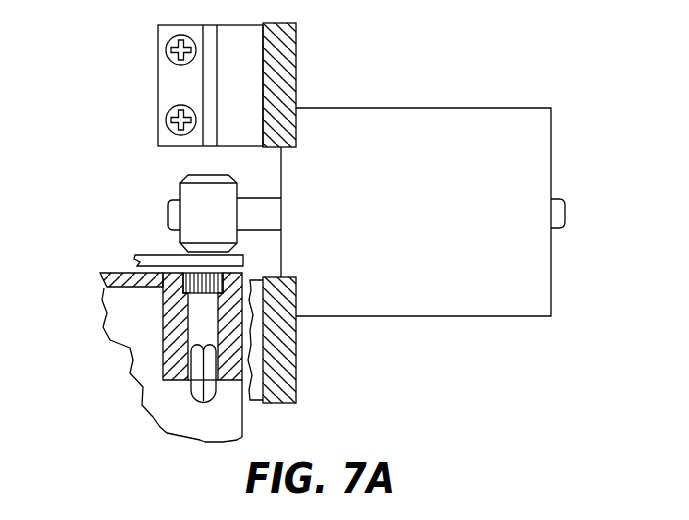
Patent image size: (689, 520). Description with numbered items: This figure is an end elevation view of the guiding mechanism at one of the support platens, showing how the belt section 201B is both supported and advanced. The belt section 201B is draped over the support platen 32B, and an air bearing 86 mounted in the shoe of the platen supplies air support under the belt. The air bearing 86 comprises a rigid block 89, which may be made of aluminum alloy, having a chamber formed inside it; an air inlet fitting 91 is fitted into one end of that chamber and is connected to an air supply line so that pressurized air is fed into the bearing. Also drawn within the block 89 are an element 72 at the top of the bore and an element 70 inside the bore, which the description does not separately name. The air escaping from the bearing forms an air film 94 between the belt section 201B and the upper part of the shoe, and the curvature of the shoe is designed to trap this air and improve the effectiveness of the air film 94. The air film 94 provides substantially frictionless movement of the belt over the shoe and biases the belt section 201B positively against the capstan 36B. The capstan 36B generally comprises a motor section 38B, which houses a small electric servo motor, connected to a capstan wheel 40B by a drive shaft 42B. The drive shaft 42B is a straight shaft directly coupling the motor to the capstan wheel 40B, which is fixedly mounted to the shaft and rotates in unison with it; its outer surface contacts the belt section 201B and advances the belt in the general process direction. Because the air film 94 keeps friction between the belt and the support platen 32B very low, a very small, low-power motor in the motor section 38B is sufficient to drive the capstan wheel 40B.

The motor section 38B is at (407, 108).
The capstan 36B is at (440, 229).
The capstan wheel 40B is at (197, 200).
The drive shaft 42B is at (253, 207).
The belt section 201B is at (140, 222).
The air film 94 is at (128, 266).
The support platen 32B is at (105, 282).
The rigid block 89 is at (163, 313).
The air bearing 86 is at (163, 360).
The nut 72 is at (212, 280).
The pin 70 is at (205, 325).
The air inlet fitting 91 is at (202, 403).